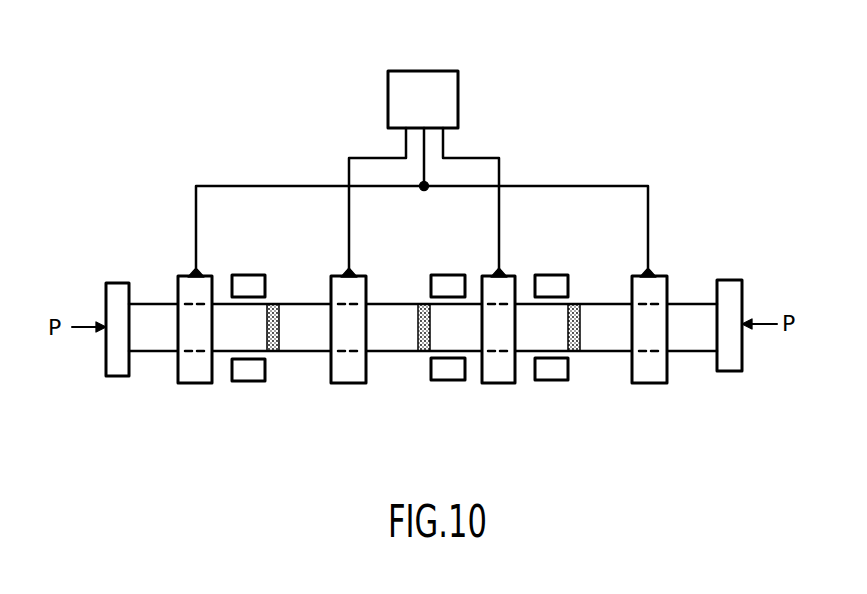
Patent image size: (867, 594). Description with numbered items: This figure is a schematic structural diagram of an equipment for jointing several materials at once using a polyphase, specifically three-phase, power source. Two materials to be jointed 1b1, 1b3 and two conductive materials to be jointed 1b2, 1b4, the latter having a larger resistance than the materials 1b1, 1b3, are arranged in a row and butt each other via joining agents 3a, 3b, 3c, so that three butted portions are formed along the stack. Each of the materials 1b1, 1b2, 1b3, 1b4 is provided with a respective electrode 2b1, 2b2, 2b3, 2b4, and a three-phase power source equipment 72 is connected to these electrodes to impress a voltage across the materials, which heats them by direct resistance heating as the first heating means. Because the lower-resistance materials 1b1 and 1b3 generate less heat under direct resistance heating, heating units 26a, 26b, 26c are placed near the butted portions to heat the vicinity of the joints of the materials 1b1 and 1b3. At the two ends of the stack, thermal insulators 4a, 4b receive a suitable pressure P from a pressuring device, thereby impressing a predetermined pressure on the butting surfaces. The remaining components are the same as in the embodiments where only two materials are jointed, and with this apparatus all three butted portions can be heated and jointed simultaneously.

The three-phase power source equipment 72 is at (445, 78).
The thermal insulator 4a is at (122, 295).
The thermal insulator 4b is at (732, 288).
The material to be jointed 1b1 is at (153, 352).
The conductive material to be jointed 1b2 is at (297, 352).
The material to be jointed 1b3 is at (475, 340).
The conductive material to be jointed 1b4 is at (608, 338).
The electrode 2b1 is at (197, 376).
The electrode 2b2 is at (350, 373).
The electrode 2b3 is at (503, 380).
The electrode 2b4 is at (658, 377).
The joining agent 3a is at (277, 325).
The joining agent 3b is at (420, 322).
The joining agent 3c is at (575, 323).
The heating unit 26a is at (237, 372).
The heating unit 26b is at (453, 363).
The heating unit 26c is at (538, 363).